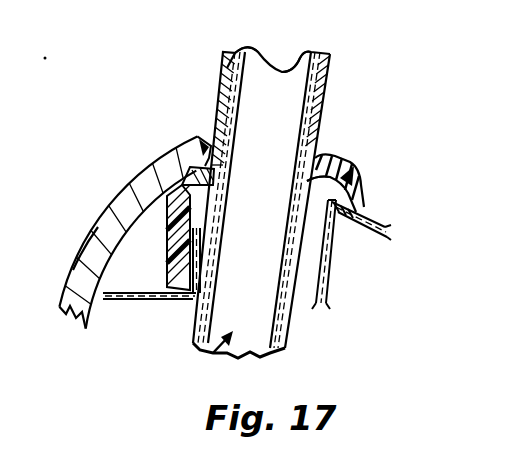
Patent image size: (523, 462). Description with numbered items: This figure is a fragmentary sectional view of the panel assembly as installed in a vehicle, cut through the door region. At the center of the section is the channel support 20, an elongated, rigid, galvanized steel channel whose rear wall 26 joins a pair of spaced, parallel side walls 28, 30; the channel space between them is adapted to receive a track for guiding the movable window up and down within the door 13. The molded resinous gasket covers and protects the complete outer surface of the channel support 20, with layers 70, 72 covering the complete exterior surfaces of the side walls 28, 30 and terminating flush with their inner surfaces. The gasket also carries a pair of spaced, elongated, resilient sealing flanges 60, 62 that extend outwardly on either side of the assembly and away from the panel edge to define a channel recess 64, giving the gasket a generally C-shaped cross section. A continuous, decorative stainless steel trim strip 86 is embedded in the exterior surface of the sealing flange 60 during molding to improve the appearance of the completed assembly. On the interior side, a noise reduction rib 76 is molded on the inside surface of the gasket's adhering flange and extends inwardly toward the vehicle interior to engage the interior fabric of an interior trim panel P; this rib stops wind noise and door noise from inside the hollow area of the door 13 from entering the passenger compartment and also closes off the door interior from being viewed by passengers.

The door 13 is at (126, 300).
The channel support 20 is at (214, 354).
The rear wall 26 is at (272, 177).
The side wall 28 is at (257, 50).
The side wall 30 is at (302, 60).
The sealing flange 60 is at (372, 208).
The sealing flange 62 is at (137, 182).
The channel recess 64 is at (318, 187).
The gasket layer 70 is at (323, 95).
The gasket layer 72 is at (223, 100).
The noise reduction rib 76 is at (200, 140).
The trim strip 86 is at (347, 197).
The interior trim panel P is at (97, 227).